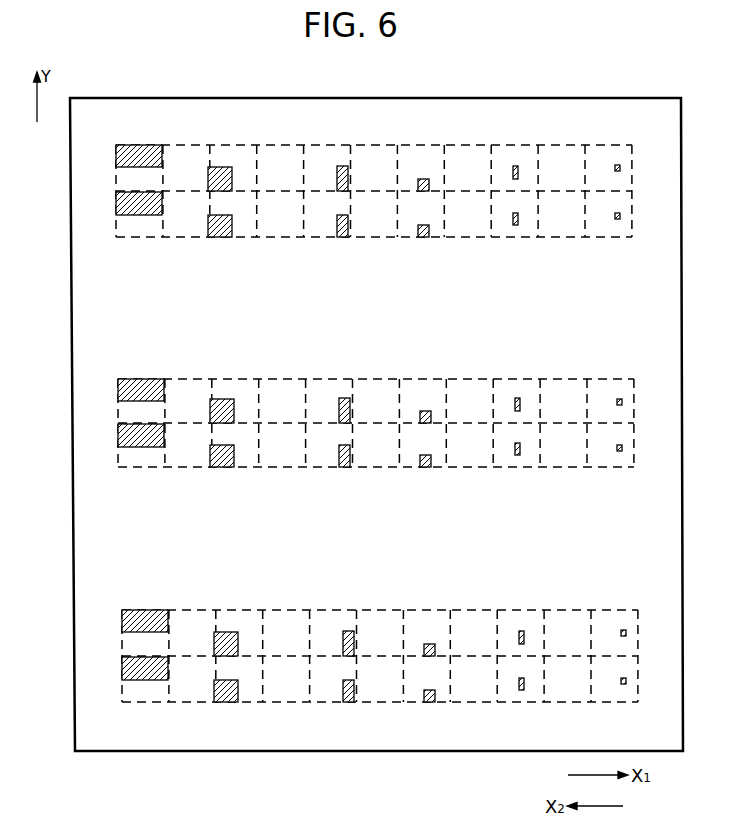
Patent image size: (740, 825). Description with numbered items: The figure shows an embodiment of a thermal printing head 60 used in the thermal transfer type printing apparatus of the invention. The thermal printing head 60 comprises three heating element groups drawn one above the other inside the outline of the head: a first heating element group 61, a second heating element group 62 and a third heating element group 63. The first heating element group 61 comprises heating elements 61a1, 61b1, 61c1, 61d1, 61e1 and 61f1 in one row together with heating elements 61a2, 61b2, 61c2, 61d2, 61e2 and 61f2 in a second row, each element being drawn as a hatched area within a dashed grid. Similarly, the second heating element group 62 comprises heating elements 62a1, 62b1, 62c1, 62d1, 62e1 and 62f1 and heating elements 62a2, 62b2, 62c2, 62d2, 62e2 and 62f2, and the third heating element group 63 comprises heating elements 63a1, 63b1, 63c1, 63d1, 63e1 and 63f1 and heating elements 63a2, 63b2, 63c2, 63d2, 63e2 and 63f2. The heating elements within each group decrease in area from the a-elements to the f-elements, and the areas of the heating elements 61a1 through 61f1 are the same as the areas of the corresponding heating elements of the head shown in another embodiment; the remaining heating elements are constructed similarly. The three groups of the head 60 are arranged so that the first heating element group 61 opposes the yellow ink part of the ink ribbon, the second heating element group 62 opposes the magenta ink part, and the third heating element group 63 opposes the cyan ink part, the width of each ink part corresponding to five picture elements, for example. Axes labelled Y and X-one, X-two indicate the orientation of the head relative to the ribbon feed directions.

The thermal printing head 60 is at (572, 57).
The first heating element group 61 is at (648, 649).
The second heating element group 62 is at (645, 424).
The third heating element group 63 is at (645, 175).
The heating element 61a1 is at (143, 615).
The heating element 61a2 is at (146, 680).
The heating element 61b1 is at (226, 632).
The heating element 61b2 is at (223, 702).
The heating element 61c1 is at (346, 631).
The heating element 61c2 is at (349, 702).
The heating element 61d1 is at (429, 644).
The heating element 61d2 is at (429, 702).
The heating element 61e1 is at (522, 631).
The heating element 61e2 is at (522, 690).
The heating element 61f1 is at (624, 630).
The heating element 61f2 is at (624, 684).
The heating element 62a1 is at (139, 384).
The heating element 62a2 is at (142, 447).
The heating element 62b1 is at (222, 399).
The heating element 62b2 is at (219, 467).
The heating element 62c1 is at (342, 398).
The heating element 62c2 is at (345, 467).
The heating element 62d1 is at (425, 411).
The heating element 62d2 is at (425, 467).
The heating element 62e1 is at (518, 398).
The heating element 62e2 is at (518, 455).
The heating element 62f1 is at (620, 399).
The heating element 62f2 is at (620, 451).
The heating element 63a1 is at (137, 150).
The heating element 63a2 is at (140, 215).
The heating element 63b1 is at (220, 167).
The heating element 63b2 is at (217, 237).
The heating element 63c1 is at (340, 166).
The heating element 63c2 is at (343, 237).
The heating element 63d1 is at (423, 179).
The heating element 63d2 is at (423, 237).
The heating element 63e1 is at (516, 166).
The heating element 63e2 is at (516, 225).
The heating element 63f1 is at (618, 165).
The heating element 63f2 is at (618, 219).